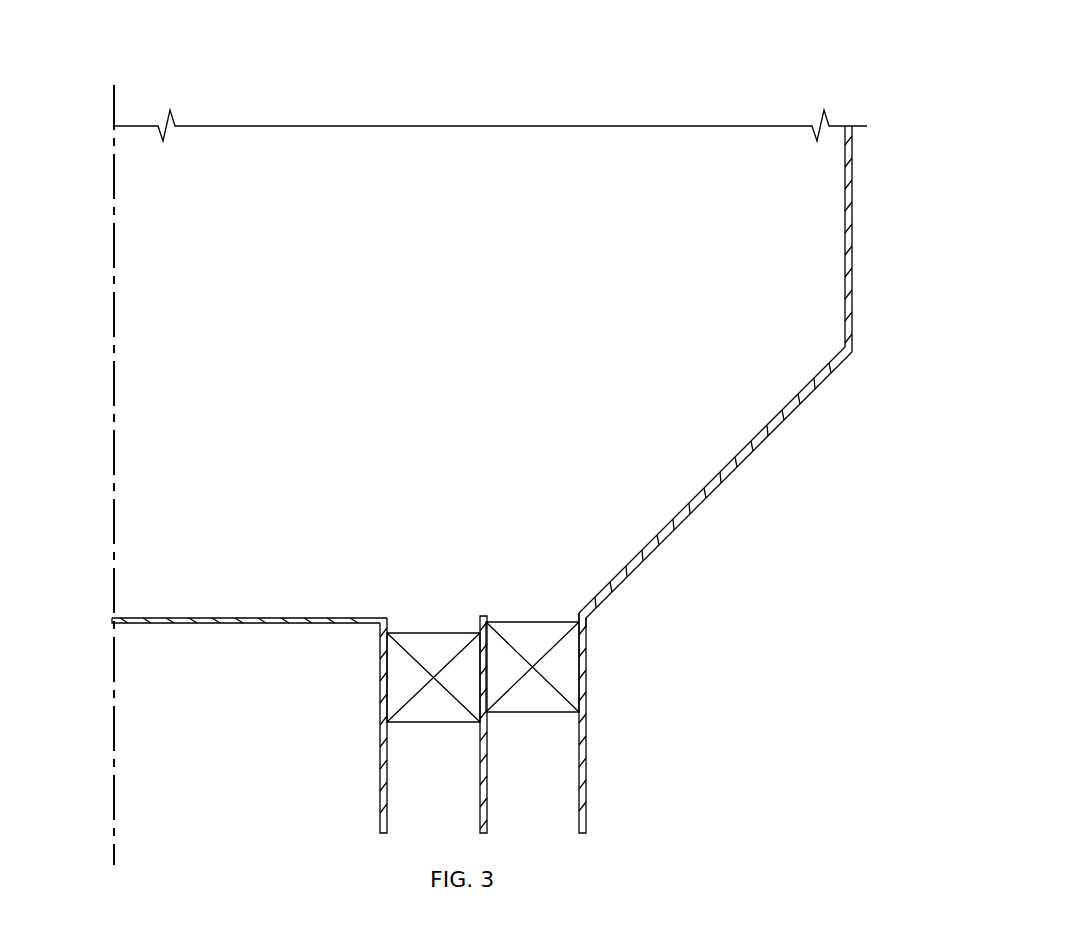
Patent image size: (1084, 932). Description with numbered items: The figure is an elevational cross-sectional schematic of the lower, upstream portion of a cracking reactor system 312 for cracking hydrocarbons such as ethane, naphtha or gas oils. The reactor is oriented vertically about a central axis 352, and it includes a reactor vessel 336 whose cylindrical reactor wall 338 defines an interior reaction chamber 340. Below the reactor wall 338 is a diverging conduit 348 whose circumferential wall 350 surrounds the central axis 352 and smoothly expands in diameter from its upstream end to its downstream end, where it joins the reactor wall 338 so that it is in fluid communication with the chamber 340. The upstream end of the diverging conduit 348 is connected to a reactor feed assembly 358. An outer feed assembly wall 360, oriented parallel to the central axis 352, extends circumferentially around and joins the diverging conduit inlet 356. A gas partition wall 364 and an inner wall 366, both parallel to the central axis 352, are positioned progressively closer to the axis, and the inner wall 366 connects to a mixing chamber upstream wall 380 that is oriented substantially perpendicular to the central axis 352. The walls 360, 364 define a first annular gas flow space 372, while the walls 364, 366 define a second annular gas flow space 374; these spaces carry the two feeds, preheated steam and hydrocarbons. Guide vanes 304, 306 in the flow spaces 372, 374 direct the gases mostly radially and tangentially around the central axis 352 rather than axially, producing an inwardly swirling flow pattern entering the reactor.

The cracking reactor system 312 is at (311, 79).
The central axis 352 is at (113, 300).
The interior reaction chamber 340 is at (485, 322).
The reactor vessel 336 is at (770, 372).
The reactor wall 338 is at (853, 295).
The diverging conduit 348 is at (715, 482).
The circumferential wall 350 is at (668, 535).
The diverging conduit inlet 356 is at (587, 620).
The reactor feed assembly 358 is at (639, 687).
The outer feed assembly wall 360 is at (587, 778).
The gas partition wall 364 is at (487, 790).
The inner wall 366 is at (380, 770).
The mixing chamber upstream wall 380 is at (211, 594).
The guide vane 304 is at (528, 630).
The guide vane 306 is at (438, 640).
The first annular gas flow space 372 is at (553, 756).
The second annular gas flow space 374 is at (455, 767).